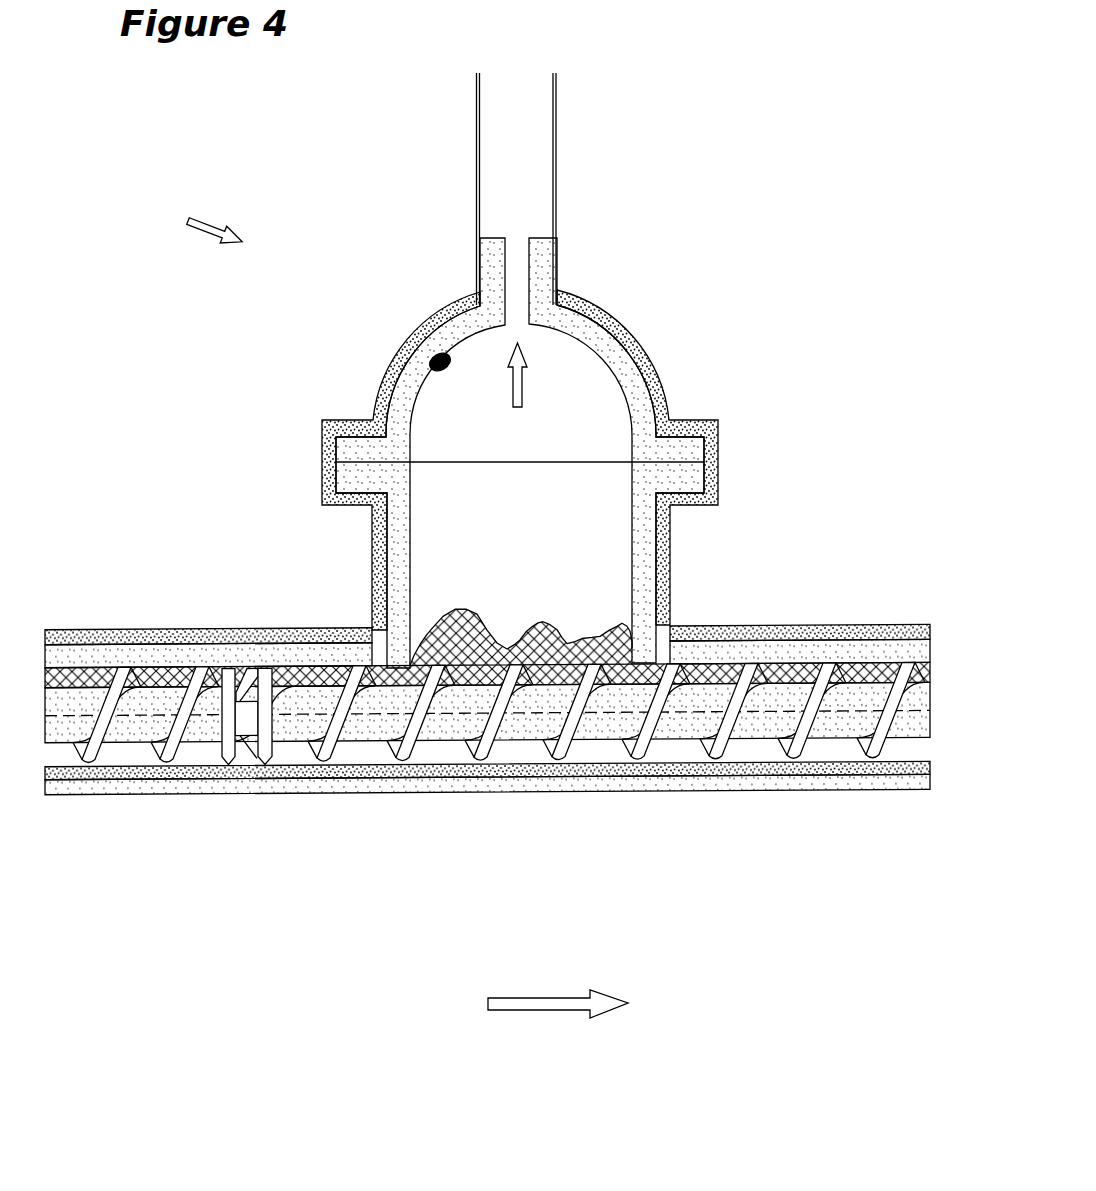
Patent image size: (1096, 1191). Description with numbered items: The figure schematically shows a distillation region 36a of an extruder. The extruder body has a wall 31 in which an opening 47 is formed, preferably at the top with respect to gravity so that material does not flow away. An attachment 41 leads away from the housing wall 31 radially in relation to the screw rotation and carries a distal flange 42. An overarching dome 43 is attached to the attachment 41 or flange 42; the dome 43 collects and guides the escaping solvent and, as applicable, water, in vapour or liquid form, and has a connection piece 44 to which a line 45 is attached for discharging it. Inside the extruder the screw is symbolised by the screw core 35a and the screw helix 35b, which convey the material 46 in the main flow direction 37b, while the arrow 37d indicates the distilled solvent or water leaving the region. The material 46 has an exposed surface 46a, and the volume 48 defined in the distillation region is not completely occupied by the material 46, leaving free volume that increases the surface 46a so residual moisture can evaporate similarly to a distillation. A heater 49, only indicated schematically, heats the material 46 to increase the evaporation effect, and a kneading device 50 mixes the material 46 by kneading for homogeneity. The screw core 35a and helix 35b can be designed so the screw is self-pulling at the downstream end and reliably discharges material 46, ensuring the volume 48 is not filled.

The wall of the extruder body 31 is at (84, 655).
The screw core 35a is at (197, 724).
The screw helix 35b is at (407, 765).
The distillation region 36a is at (183, 221).
The main material flow direction 37b is at (558, 1017).
The distilled solvent or water flow direction 37d is at (526, 394).
The attachment 41 is at (652, 550).
The distal flange 42 is at (690, 472).
The dome 43 is at (585, 324).
The connection piece 44 is at (548, 246).
The line 45 is at (528, 163).
The material 46 is at (466, 614).
The surface of the material 46a is at (547, 618).
The opening 47 is at (487, 665).
The volume 48 is at (486, 362).
The heater 49 is at (432, 357).
The kneading device 50 is at (230, 668).